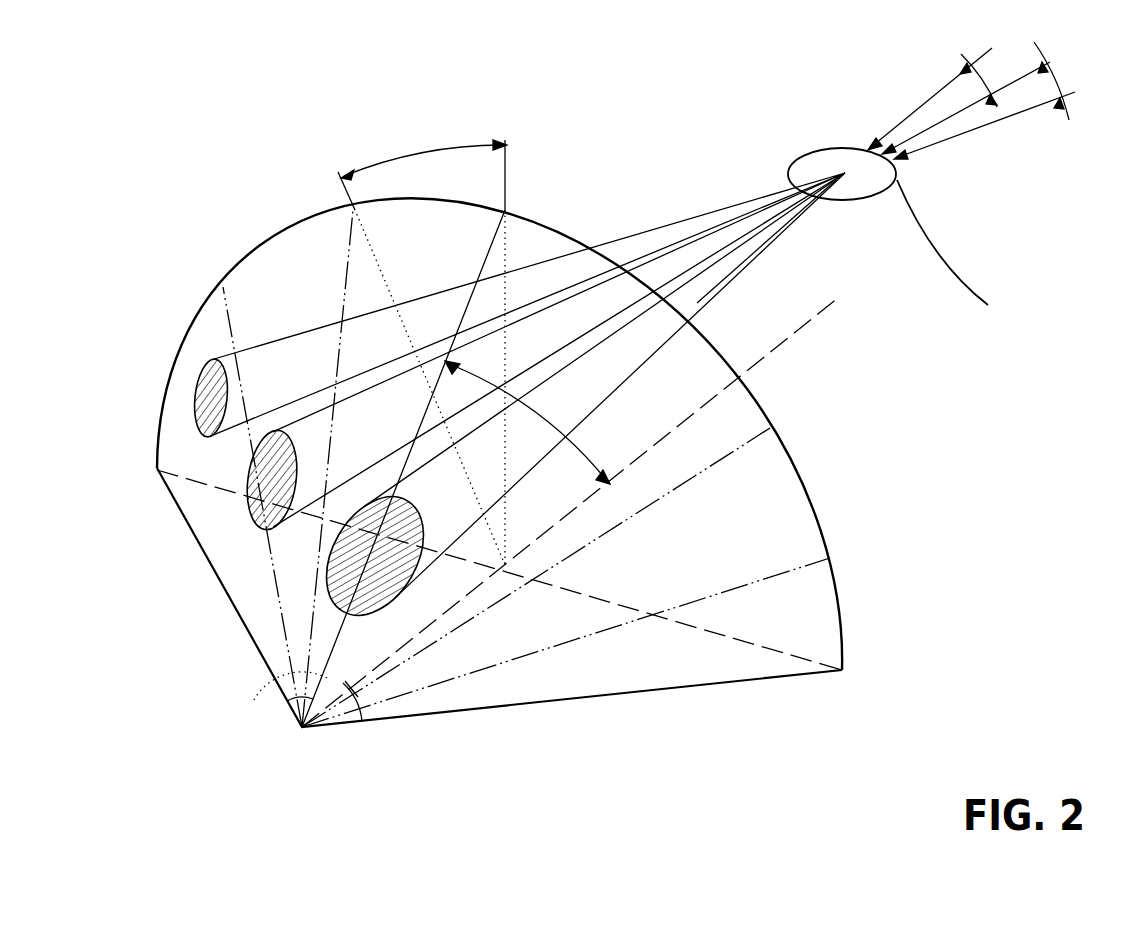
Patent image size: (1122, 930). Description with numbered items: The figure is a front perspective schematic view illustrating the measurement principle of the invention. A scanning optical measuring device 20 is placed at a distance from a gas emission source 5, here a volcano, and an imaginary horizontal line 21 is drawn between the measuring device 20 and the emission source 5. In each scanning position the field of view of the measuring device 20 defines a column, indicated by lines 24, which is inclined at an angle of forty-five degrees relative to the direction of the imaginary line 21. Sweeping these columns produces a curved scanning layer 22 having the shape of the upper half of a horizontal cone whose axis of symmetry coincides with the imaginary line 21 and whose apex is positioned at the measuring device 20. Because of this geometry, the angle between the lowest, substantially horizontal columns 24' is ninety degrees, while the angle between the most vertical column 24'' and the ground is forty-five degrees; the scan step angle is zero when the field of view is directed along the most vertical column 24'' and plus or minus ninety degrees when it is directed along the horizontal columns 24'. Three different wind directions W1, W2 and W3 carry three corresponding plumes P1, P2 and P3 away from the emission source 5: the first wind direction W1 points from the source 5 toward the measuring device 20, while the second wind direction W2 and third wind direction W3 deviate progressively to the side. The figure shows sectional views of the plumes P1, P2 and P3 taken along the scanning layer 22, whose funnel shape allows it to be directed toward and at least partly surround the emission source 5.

The emission source 5 is at (947, 260).
The measuring device 20 is at (300, 727).
The imaginary horizontal line 21 is at (785, 342).
The scanning layer 22 is at (807, 493).
The column 24 is at (477, 498).
The lowest horizontal column 24' is at (507, 621).
The most vertical column 24'' is at (464, 433).
The first plume P1 is at (443, 500).
The second plume P2 is at (343, 397).
The third plume P3 is at (273, 370).
The first wind direction W1 is at (920, 103).
The second wind direction W2 is at (980, 108).
The third wind direction W3 is at (927, 147).